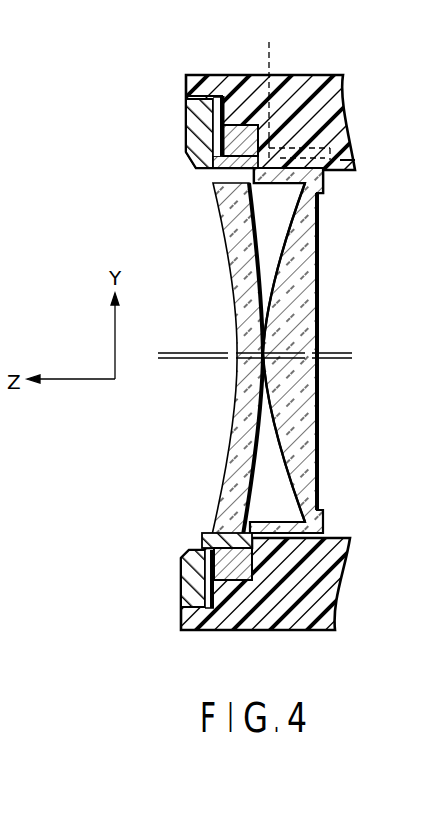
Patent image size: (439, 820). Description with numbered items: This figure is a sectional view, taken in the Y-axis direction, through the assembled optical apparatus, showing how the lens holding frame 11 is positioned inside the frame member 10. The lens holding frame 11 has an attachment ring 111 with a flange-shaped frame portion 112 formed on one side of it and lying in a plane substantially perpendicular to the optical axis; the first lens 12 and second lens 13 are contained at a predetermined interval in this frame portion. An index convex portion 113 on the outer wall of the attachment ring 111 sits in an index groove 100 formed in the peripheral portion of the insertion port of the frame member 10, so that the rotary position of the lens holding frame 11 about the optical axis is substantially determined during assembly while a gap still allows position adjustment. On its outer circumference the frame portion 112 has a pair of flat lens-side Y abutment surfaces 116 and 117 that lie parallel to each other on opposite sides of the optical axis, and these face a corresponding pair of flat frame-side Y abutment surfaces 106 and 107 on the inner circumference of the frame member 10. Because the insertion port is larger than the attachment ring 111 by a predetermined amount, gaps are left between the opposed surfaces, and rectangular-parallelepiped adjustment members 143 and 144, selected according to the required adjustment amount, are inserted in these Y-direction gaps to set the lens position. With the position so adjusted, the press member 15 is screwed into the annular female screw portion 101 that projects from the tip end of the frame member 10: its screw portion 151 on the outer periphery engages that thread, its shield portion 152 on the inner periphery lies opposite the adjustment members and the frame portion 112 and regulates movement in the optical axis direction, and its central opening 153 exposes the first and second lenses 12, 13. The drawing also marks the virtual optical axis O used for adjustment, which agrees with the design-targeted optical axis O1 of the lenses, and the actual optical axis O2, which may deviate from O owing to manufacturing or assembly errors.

The frame member 10 is at (285, 120).
The index groove 100 is at (291, 90).
The female screw portion 101 is at (186, 78).
The frame-side Y axis abutment surface 106 is at (211, 97).
The frame-side Y axis abutment surface 107 is at (258, 576).
The lens holding frame 11 is at (317, 350).
The attachment ring 111 is at (315, 203).
The frame portion 112 is at (291, 226).
The index convex portion 113 is at (355, 152).
The lens-side Y abutment surface 116 is at (222, 176).
The lens-side Y abutment surface 117 is at (203, 552).
The first lens 12 is at (240, 325).
The second lens 13 is at (280, 433).
The adjustment member 143 is at (244, 126).
The adjustment member 144 is at (250, 582).
The press member 15 is at (160, 152).
The screw portion 151 is at (187, 102).
The shield portion 152 is at (187, 133).
The opening 153 is at (204, 170).
The virtual optical axis O is at (286, 356).
The design-targeted optical axis O1 is at (350, 354).
The actual optical axis O2 is at (350, 359).